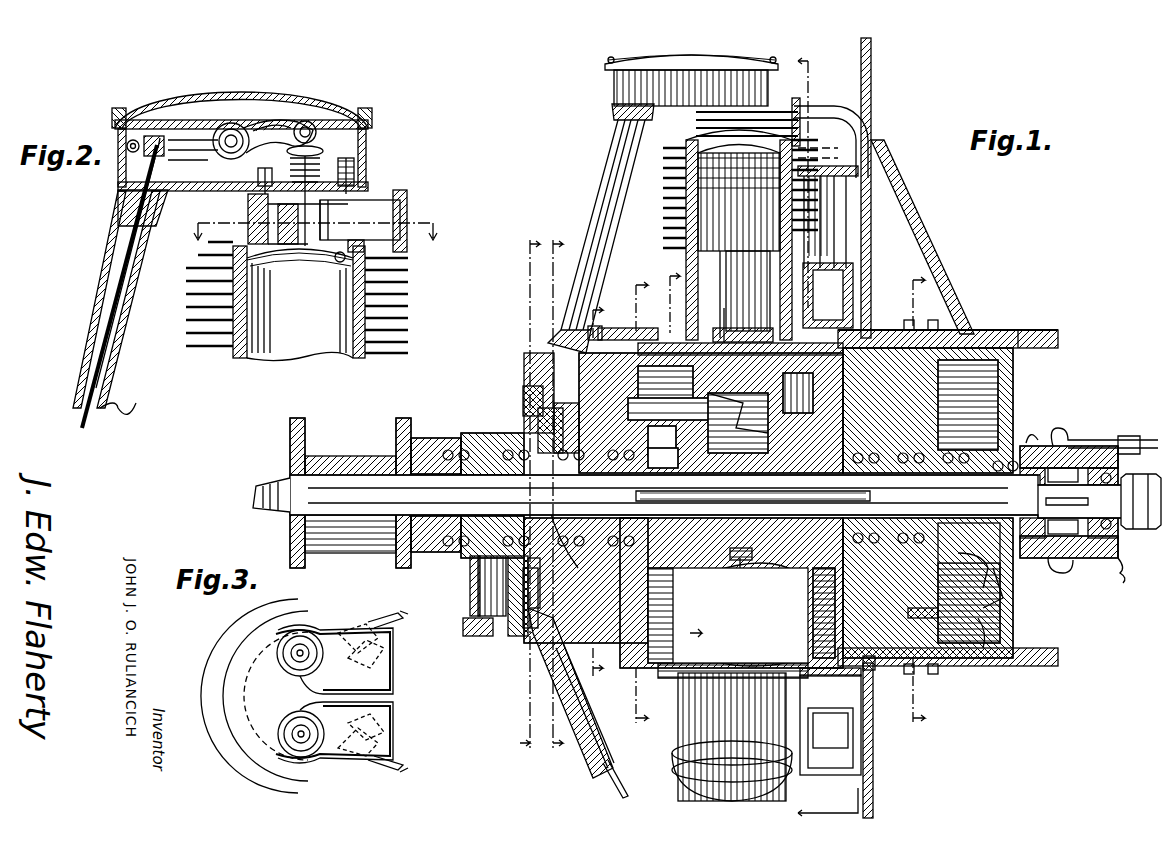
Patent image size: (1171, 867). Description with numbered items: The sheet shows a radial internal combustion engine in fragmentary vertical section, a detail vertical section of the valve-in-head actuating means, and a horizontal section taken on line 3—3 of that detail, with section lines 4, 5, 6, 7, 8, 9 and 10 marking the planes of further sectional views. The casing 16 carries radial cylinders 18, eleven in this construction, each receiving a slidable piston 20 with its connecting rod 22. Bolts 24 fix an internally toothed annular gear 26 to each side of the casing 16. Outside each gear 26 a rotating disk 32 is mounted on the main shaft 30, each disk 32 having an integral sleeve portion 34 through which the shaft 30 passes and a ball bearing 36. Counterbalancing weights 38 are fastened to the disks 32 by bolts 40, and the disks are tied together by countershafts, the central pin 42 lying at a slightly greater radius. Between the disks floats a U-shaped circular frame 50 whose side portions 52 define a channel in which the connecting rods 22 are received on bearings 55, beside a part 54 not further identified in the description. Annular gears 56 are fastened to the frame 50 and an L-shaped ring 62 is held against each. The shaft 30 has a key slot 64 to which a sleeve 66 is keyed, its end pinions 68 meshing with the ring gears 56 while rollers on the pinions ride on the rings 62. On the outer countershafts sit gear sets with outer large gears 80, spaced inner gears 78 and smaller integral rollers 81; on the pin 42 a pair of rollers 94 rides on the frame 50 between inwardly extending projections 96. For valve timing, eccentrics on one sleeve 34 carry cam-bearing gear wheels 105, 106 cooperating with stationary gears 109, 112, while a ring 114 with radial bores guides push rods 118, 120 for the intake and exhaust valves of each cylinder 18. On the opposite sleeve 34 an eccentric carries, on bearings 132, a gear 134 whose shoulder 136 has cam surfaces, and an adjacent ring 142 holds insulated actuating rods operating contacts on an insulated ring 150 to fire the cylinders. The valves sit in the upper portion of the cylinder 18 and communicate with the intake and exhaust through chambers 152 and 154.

In FIG. 2, the section line 3— 3 is at (313, 240).
In FIG. 1, the section line 4- 4 is at (809, 431).
In FIG. 1, the section line 5- 5 is at (599, 491).
In FIG. 1, the section line 6- 6 is at (637, 501).
In FIG. 1, the section line 7- 7 is at (684, 451).
In FIG. 1, the section line 8- 8 is at (530, 492).
In FIG. 1, the section line 9- 9 is at (555, 492).
In FIG. 1, the section line 10- 10 is at (914, 500).
In FIG. 1, the casing 16 is at (640, 320).
In FIG. 2, the radial cylinders 18 is at (297, 301).
In FIG. 3, the radial cylinders 18 is at (254, 696).
In FIG. 1, the radial cylinders 18 is at (690, 248).
In FIG. 1, the piston 20 is at (739, 198).
In FIG. 1, the connecting rod 22 is at (749, 449).
In FIG. 1, the bolts 24 is at (600, 320).
In FIG. 1, the annular gear 26 is at (810, 603).
In FIG. 1, the main shaft 30 is at (707, 501).
In FIG. 1, the rotating frames or disks 32 is at (590, 350).
In FIG. 1, the sleeve portions 34 is at (460, 425).
In FIG. 1, the ball bearing 36 is at (900, 440).
In FIG. 1, the counterbalancing weights 38 is at (525, 641).
In FIG. 1, the bolts 40 is at (520, 620).
In FIG. 1, the main central bolt or pin 42 is at (673, 407).
In FIG. 1, the floating circular frame 50 is at (770, 590).
In FIG. 1, the side portions 52 is at (830, 721).
In FIG. 1, the cylinder base flange 54 is at (755, 325).
In FIG. 1, the bearings 55 is at (714, 297).
In FIG. 1, the annular gears 56 is at (850, 270).
In FIG. 1, the ring 62 is at (845, 300).
In FIG. 1, the key slot 64 is at (630, 488).
In FIG. 1, the sleeve 66 is at (662, 439).
In FIG. 1, the pinions 68 is at (747, 460).
In FIG. 1, the inner gear 78 is at (802, 393).
In FIG. 1, the outer large gear 80 is at (965, 324).
In FIG. 1, the roller 81 is at (1015, 324).
In FIG. 1, the rollers 94 is at (738, 423).
In FIG. 1, the inwardly extending projection 96 is at (753, 643).
In FIG. 1, the gear wheel 105 is at (498, 610).
In FIG. 1, the gear wheel 106 is at (470, 575).
In FIG. 1, the stationary gear 109 is at (543, 527).
In FIG. 1, the stationary gear 112 is at (520, 580).
In FIG. 1, the ring 114 is at (518, 356).
In FIG. 1, the push rod 118 is at (515, 388).
In FIG. 2, the push rod 120 is at (188, 155).
In FIG. 1, the push rod 120 is at (530, 412).
In FIG. 1, the bearings 132 is at (1000, 575).
In FIG. 1, the gear 134 is at (915, 430).
In FIG. 1, the shoulder 136 is at (900, 445).
In FIG. 1, the ring 142 is at (935, 392).
In FIG. 1, the insulated ring 150 is at (930, 318).
In FIG. 2, the chamber 152 is at (360, 203).
In FIG. 3, the chamber 152 is at (322, 630).
In FIG. 3, the chamber 154 is at (362, 718).